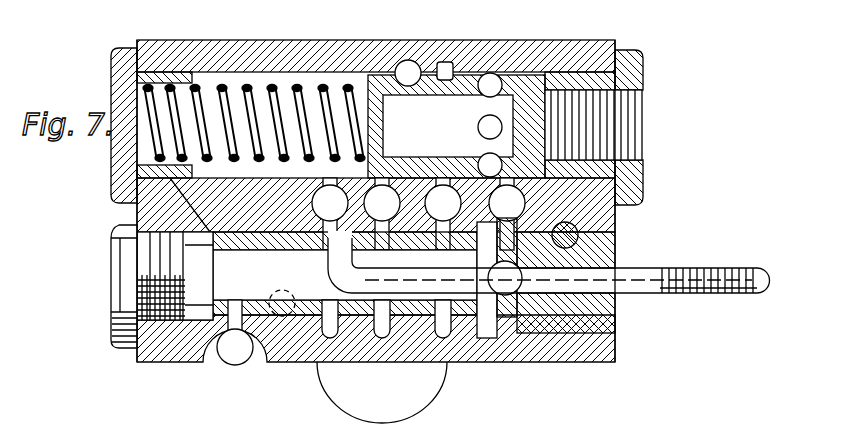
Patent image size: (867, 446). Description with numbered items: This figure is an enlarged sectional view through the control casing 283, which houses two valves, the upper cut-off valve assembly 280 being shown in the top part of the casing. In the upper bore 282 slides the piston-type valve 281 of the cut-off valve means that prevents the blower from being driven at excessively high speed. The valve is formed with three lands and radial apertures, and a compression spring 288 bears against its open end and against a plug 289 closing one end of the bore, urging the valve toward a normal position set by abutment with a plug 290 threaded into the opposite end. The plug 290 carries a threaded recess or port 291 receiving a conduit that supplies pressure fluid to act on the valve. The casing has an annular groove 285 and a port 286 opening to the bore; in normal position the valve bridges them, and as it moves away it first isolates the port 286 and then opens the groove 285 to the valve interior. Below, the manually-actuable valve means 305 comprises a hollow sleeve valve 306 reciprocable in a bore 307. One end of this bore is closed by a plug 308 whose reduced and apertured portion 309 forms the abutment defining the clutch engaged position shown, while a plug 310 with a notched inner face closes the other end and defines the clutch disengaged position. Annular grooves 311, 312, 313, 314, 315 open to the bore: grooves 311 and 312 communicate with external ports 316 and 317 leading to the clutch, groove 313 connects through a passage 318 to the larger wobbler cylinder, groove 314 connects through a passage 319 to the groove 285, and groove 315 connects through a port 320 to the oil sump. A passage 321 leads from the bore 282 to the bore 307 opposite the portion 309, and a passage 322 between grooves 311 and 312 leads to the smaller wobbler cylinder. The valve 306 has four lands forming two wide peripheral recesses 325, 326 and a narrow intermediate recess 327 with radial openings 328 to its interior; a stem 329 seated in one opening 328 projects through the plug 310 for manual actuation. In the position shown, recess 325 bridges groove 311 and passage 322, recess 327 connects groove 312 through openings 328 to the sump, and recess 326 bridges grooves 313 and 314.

The valve unit 280 is at (520, 75).
The valve 281 is at (520, 110).
The bore 282 is at (205, 72).
The casing 283 is at (600, 212).
The annular groove 285 is at (446, 62).
The port 286 is at (405, 60).
The compression spring 288 is at (270, 85).
The plug 289 is at (113, 60).
The plug 290 is at (645, 68).
The threaded recess or port 291 is at (625, 160).
The manually-actuable valve means 305 is at (190, 336).
The sleeve valve 306 is at (450, 338).
The bore 307 is at (490, 325).
The plug 308 is at (165, 330).
The reduced and apertured portion 309 is at (195, 248).
The plug 310 is at (600, 243).
The annular groove 311 is at (215, 362).
The annular groove 312 is at (322, 338).
The annular groove 313 is at (385, 338).
The annular groove 314 is at (445, 365).
The annular groove 315 is at (510, 330).
The external port 316 is at (233, 366).
The external port 317 is at (335, 188).
The passage 318 is at (385, 188).
The passage 319 is at (445, 188).
The port 320 is at (522, 278).
The passage 321 is at (150, 180).
The passage 322 is at (295, 362).
The peripheral recess 325 is at (270, 240).
The peripheral recess 326 is at (412, 312).
The intermediate recess 327 is at (340, 340).
The radial openings 328 is at (328, 285).
The stem 329 is at (655, 295).